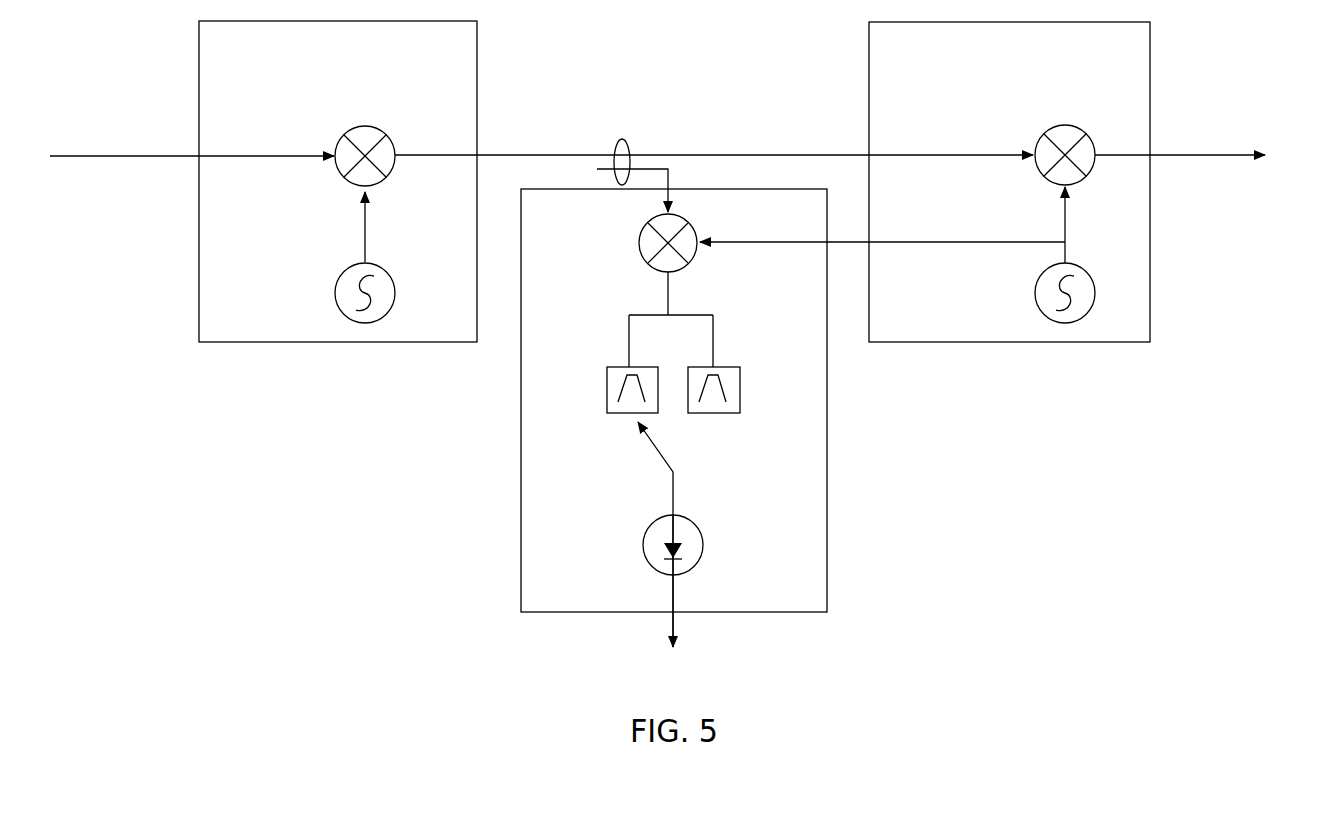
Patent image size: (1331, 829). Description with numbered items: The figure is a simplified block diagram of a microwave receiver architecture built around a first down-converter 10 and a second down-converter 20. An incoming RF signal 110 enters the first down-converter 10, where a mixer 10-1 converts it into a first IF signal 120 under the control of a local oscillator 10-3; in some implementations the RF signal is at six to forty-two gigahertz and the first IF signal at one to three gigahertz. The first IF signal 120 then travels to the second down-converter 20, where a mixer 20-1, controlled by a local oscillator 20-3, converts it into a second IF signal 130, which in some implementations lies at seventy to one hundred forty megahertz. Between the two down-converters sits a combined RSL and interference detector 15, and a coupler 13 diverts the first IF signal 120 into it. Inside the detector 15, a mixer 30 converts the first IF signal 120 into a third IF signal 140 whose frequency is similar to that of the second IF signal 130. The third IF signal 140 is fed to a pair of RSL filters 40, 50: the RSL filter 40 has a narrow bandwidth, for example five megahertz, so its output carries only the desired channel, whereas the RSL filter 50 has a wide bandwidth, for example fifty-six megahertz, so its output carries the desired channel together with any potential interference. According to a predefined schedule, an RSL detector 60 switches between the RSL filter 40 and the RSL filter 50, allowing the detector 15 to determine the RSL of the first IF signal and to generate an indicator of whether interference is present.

The first down-converter 10 is at (338, 181).
The mixer 10-1 is at (390, 140).
The local oscillator 10-3 is at (387, 270).
The RF signal 110 is at (100, 123).
The first IF signal 120 is at (657, 155).
The coupler 13 is at (610, 157).
The combined RSL and interference detector 15 is at (674, 400).
The mixer 30 is at (697, 225).
The third IF signal 140 is at (668, 290).
The RSL filter 40 is at (607, 397).
The RSL filter 50 is at (740, 395).
The RSL detector 60 is at (692, 520).
The second down-converter 20 is at (1009, 182).
The mixer 20-1 is at (1092, 142).
The local oscillator 20-3 is at (1088, 267).
The second IF signal 130 is at (1233, 153).